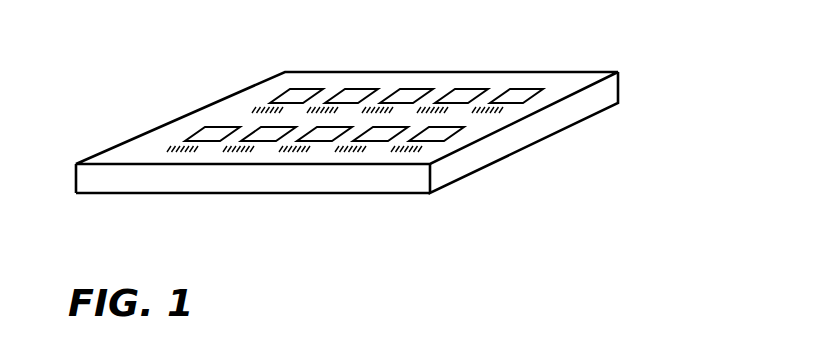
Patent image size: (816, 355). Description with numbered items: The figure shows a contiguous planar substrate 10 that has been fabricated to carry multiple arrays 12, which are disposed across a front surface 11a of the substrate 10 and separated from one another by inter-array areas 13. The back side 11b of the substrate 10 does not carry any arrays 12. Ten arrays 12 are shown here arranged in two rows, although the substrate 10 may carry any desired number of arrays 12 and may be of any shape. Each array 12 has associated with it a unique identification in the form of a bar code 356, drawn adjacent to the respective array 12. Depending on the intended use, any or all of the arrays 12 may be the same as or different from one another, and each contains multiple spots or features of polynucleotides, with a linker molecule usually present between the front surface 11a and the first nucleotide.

The substrate 10 is at (532, 135).
The front surface 11a is at (577, 77).
The back side 11b is at (103, 195).
The array 12 is at (200, 130).
The inter-array area 13 is at (388, 146).
The bar code 356 is at (253, 110).